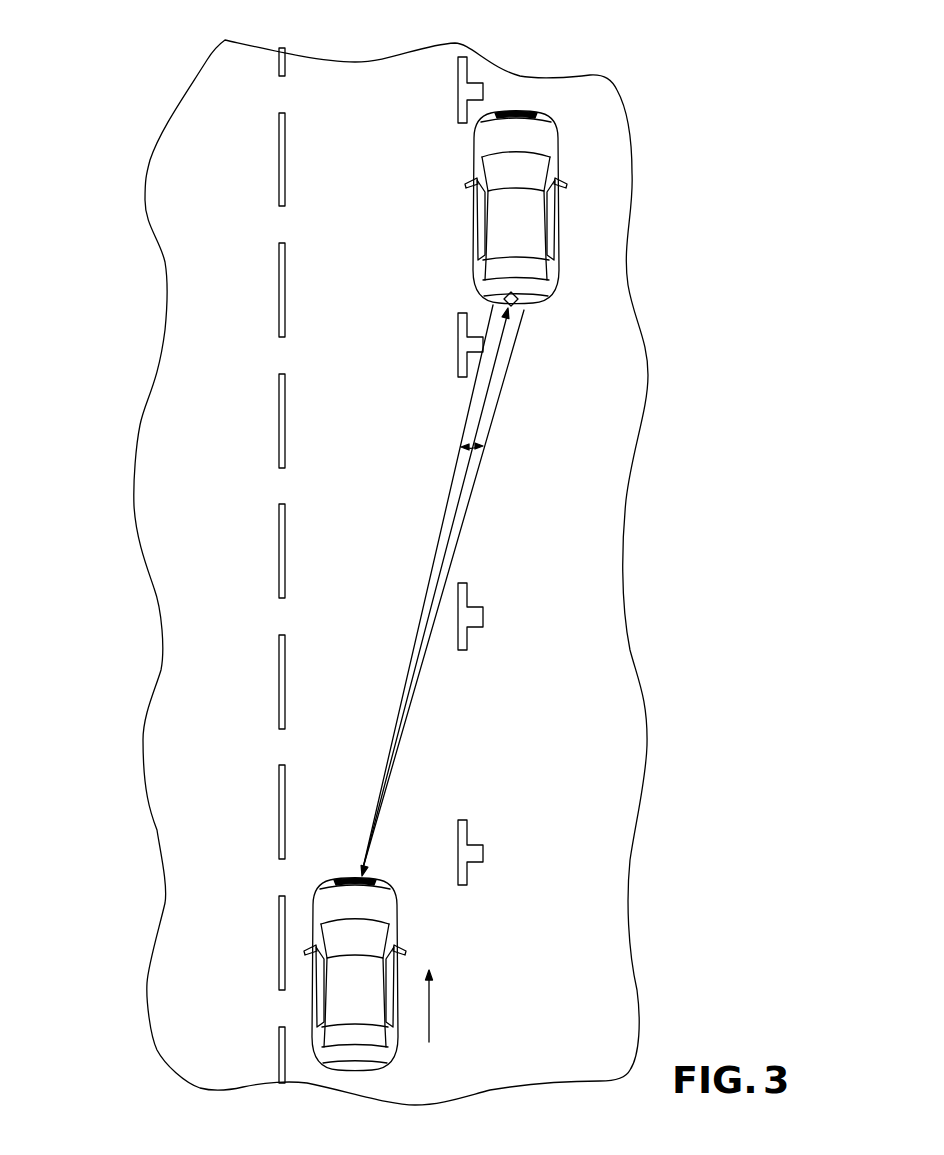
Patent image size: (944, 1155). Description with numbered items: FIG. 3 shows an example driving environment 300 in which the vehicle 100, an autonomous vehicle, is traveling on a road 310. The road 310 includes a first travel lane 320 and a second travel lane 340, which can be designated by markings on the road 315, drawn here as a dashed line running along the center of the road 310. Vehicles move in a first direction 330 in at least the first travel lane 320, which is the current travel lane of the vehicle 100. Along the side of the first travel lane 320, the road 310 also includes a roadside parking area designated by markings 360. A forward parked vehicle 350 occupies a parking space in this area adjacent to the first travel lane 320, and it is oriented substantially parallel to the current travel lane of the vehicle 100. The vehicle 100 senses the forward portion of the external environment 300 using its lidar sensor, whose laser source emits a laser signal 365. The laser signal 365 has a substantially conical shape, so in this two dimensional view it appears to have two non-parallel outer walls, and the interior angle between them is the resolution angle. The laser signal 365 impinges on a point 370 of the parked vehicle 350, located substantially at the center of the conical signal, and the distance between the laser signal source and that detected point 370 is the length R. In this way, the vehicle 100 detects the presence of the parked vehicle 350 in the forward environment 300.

The vehicle 100 is at (398, 1057).
The environment 300 is at (101, 60).
The road 310 is at (126, 680).
The markings on the road 315 is at (286, 62).
The first travel lane 320 is at (307, 1067).
The first direction 330 is at (429, 1006).
The second travel lane 340 is at (212, 1067).
The parked vehicle 350 is at (557, 212).
The markings 360 is at (445, 79).
The laser signal 365 is at (487, 488).
The points 370 is at (518, 299).
The length R is at (490, 404).